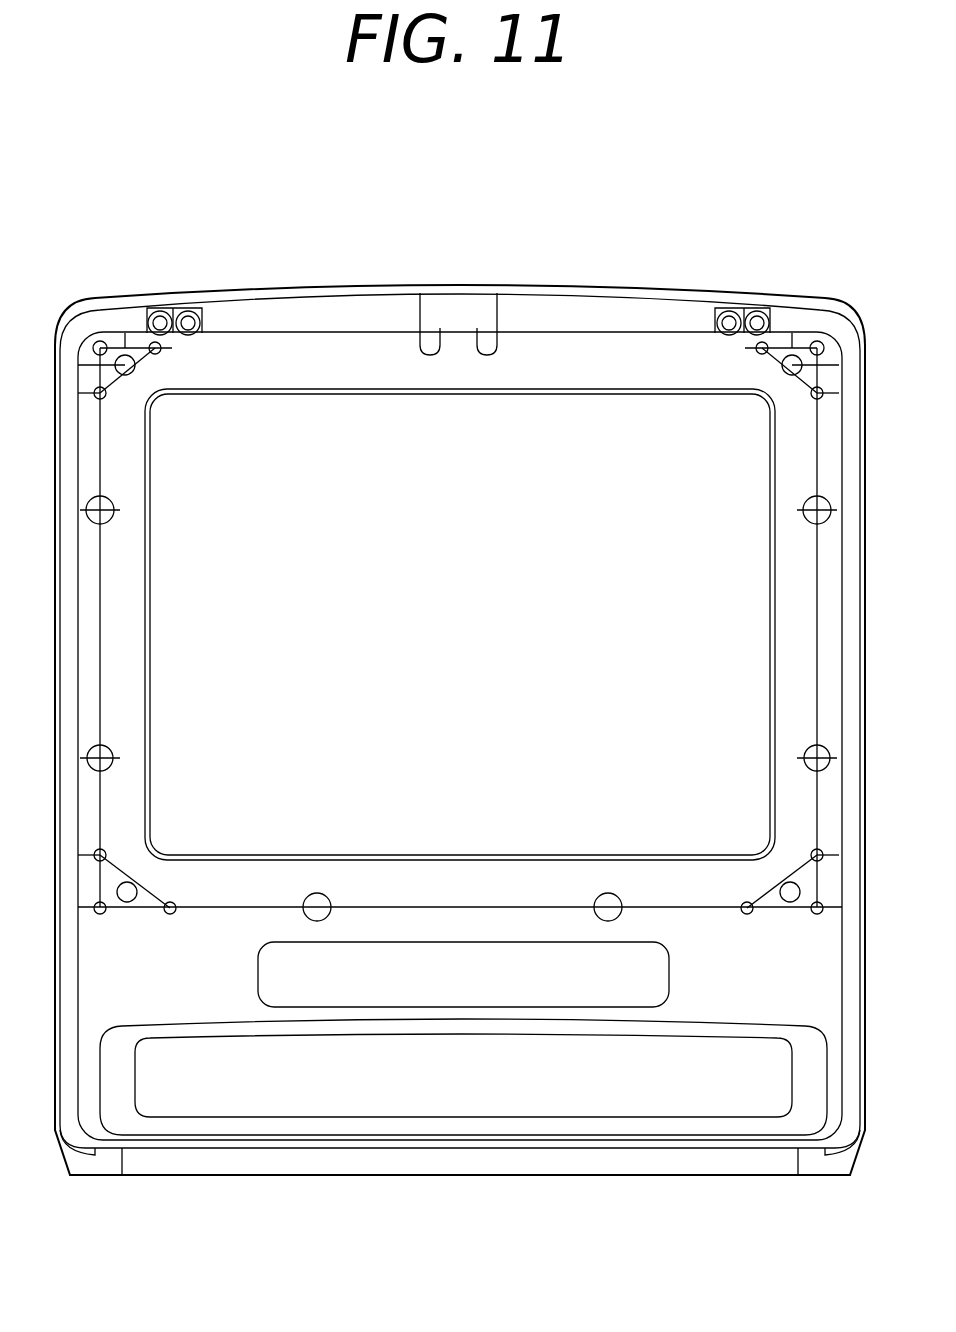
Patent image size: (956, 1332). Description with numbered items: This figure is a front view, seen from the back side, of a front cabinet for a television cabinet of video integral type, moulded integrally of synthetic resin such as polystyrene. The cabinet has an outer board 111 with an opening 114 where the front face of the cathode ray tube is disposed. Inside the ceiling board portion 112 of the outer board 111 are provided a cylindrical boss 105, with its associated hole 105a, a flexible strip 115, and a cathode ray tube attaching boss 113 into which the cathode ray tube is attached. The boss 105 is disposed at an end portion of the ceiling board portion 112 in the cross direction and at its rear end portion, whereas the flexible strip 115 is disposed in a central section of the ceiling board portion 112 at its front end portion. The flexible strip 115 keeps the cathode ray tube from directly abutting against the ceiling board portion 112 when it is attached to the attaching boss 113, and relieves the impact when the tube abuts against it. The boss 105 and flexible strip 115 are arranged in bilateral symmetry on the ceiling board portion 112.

The cylindrical boss 105 is at (158, 311).
The mounting hole 105a is at (190, 311).
The outer board 111 is at (460, 372).
The ceiling board portion 112 is at (570, 284).
The cathode ray tube attaching boss 113 is at (133, 375).
The opening 114 is at (150, 622).
The flexible strip 115 is at (432, 357).